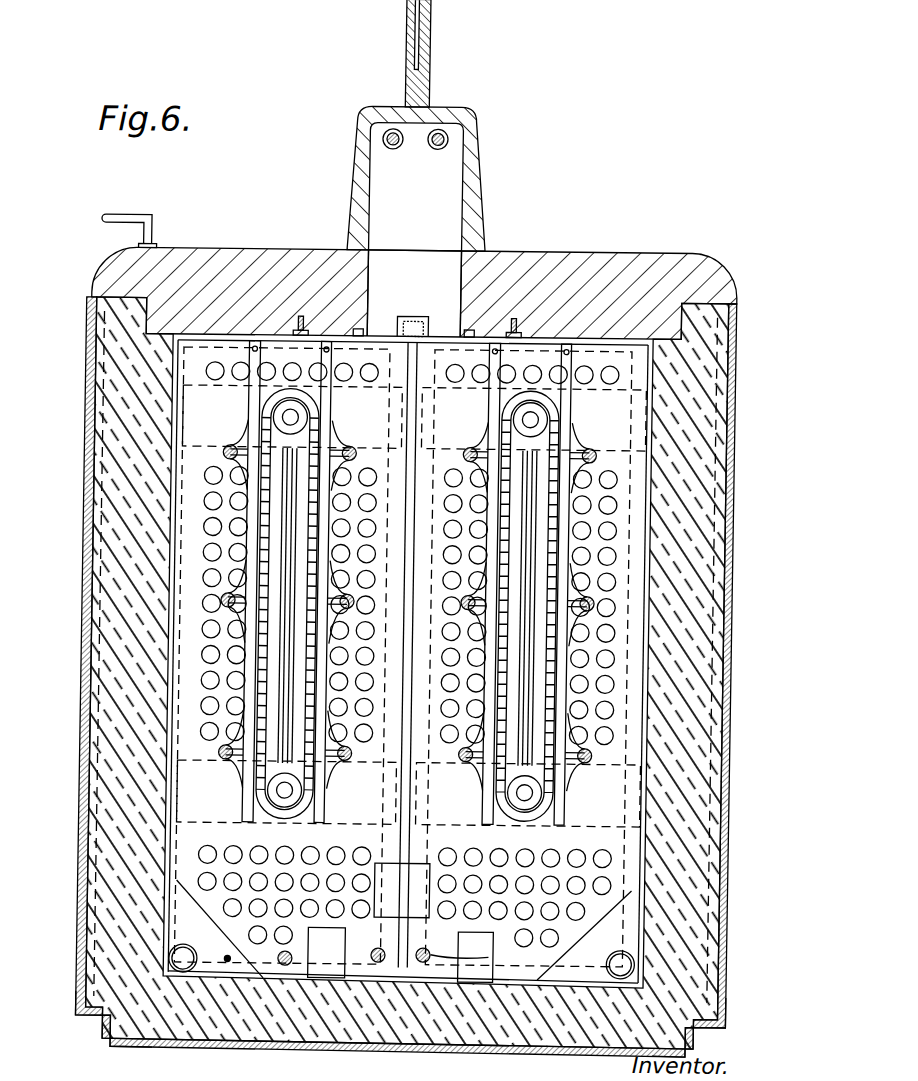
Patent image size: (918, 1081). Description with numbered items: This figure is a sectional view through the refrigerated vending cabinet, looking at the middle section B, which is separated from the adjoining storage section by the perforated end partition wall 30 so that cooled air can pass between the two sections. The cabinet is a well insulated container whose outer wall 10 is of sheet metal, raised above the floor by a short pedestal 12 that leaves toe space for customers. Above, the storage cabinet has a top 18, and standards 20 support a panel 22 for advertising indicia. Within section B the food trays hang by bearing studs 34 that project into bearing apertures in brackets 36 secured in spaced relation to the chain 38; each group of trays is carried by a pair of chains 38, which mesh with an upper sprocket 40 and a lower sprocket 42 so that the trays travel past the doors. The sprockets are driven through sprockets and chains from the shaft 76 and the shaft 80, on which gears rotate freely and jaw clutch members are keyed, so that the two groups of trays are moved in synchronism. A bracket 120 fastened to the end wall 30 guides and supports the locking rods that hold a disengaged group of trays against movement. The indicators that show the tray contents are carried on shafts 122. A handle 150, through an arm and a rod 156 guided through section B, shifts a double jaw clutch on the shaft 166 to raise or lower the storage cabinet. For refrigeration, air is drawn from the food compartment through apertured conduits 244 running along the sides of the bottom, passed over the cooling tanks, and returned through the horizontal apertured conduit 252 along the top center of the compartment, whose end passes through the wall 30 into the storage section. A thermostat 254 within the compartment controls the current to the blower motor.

The outer wall 10 is at (93, 590).
The pedestal 12 is at (100, 1032).
The top 18 is at (258, 251).
The standards 20 is at (470, 168).
The panel 22 is at (423, 33).
The end partition wall 30 is at (640, 866).
The bearing studs 34 is at (228, 452).
The brackets 36 is at (310, 440).
The chain 38 is at (304, 401).
The sprocket 40 is at (280, 417).
The sprocket 42 is at (280, 792).
The shaft 76 is at (499, 956).
The shaft 80 is at (379, 953).
The bracket 120 is at (437, 955).
The shafts 122 is at (398, 136).
The handle 150 is at (133, 215).
The rod 156 is at (236, 960).
The shaft 166 is at (297, 957).
The apertured conduits 244 is at (200, 961).
The apertured conduit 252 is at (412, 317).
The thermostat 254 is at (435, 865).
The section B is at (197, 638).